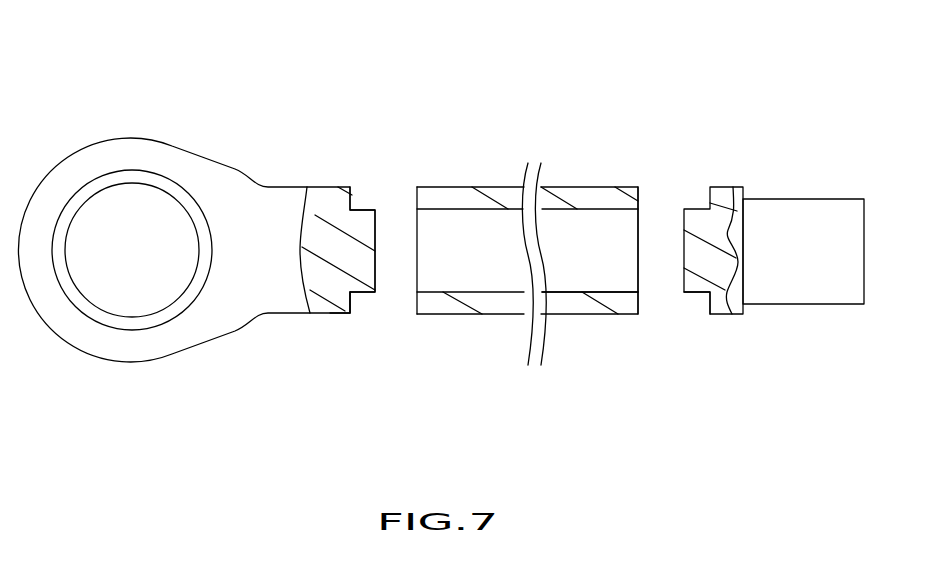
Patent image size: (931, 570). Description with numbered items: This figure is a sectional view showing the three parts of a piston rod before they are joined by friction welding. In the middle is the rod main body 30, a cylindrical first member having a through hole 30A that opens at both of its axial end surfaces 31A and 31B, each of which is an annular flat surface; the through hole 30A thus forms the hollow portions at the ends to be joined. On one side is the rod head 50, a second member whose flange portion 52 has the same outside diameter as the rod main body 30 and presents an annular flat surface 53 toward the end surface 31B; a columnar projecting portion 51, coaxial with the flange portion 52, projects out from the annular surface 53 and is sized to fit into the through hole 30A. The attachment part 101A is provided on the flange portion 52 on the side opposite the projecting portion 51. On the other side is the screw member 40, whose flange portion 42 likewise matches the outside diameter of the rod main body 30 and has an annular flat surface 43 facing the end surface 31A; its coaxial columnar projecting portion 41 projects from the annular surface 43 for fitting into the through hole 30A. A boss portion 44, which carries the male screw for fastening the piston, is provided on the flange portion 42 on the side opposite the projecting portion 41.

The rod head 50 is at (138, 122).
The attachment part 101A is at (152, 340).
The flange portion 52 is at (328, 205).
The projecting portion 51 is at (363, 220).
The annular surface 53 is at (358, 303).
The rod main body 30 is at (499, 193).
The end surface 31B is at (417, 200).
The end surface 31A is at (640, 200).
The through hole 30A is at (570, 290).
The screw member 40 is at (822, 133).
The projecting portion 41 is at (692, 222).
The flange portion 42 is at (723, 192).
The annular surface 43 is at (702, 302).
The boss portion 44 is at (780, 260).